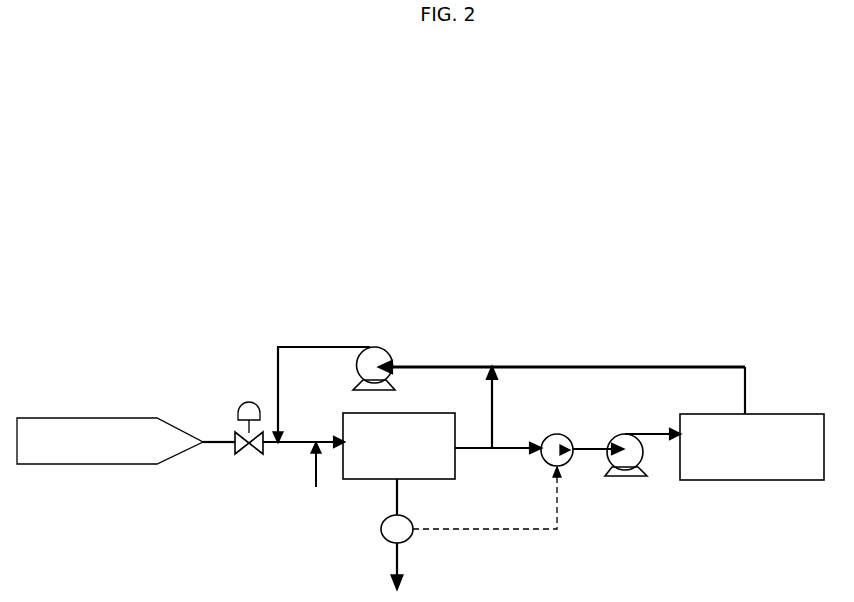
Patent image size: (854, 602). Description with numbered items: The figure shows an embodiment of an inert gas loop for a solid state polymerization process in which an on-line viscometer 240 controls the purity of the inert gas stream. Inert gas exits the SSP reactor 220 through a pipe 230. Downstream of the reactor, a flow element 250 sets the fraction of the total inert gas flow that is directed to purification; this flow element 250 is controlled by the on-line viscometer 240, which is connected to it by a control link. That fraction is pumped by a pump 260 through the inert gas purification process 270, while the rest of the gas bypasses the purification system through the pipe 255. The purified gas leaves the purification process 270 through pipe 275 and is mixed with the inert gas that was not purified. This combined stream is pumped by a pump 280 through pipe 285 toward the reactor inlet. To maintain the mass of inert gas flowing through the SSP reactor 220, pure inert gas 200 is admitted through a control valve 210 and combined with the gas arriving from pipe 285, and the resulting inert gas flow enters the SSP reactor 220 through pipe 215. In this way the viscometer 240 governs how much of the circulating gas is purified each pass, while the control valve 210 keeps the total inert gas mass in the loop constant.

The pure inert gas 200 is at (88, 428).
The control valve 210 is at (248, 462).
The pipe 215 is at (310, 481).
The SSP reactor 220 is at (402, 444).
The pipe 230 is at (475, 462).
The on-line viscometer 240 is at (373, 534).
The flow element 250 is at (563, 458).
The pipe 255 is at (517, 401).
The pump 260 is at (630, 484).
The inert gas purification process 270 is at (753, 445).
The pipe 275 is at (665, 357).
The pump 280 is at (368, 347).
The pipe 285 is at (274, 340).